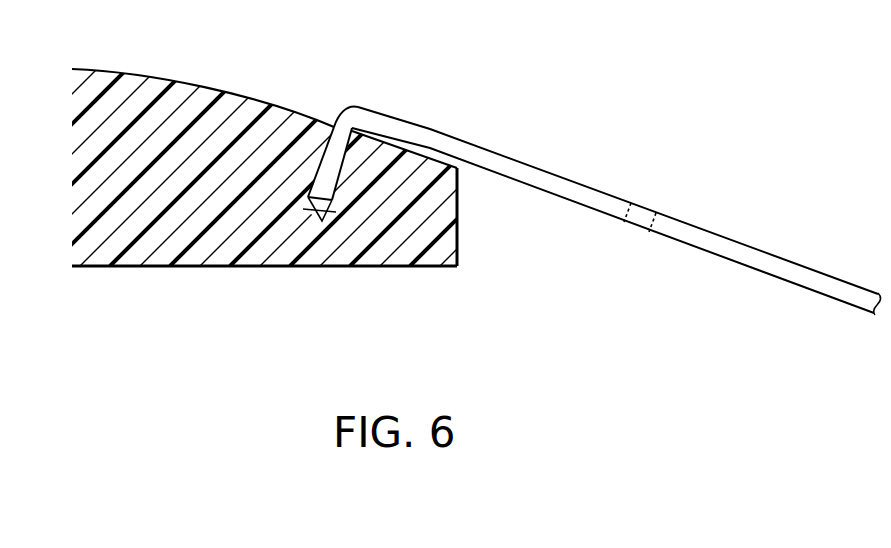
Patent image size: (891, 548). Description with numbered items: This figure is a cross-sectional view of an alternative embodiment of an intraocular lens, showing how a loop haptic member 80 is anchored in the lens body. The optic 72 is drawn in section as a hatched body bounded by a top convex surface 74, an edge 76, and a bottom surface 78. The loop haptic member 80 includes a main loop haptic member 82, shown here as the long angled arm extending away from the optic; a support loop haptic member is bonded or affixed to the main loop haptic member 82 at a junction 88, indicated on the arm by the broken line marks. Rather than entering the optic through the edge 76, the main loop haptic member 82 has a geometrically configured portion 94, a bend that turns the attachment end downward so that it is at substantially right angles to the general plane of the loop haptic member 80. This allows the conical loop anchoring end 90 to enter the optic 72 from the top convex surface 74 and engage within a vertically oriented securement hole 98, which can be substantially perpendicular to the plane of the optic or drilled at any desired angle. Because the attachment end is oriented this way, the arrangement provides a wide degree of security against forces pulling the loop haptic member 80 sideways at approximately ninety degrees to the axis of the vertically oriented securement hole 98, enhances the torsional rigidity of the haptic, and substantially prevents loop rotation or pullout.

The optic 72 is at (228, 91).
The top convex surface 74 is at (131, 73).
The edge 76 is at (459, 243).
The bottom surface 78 is at (400, 267).
The loop haptic member 80 is at (587, 190).
The main loop haptic member 82 is at (443, 143).
The junction 88 is at (637, 211).
The conical loop anchoring end 90 is at (300, 224).
The geometrically configured portion 94 is at (353, 117).
The vertically oriented securement hole 98 is at (320, 214).